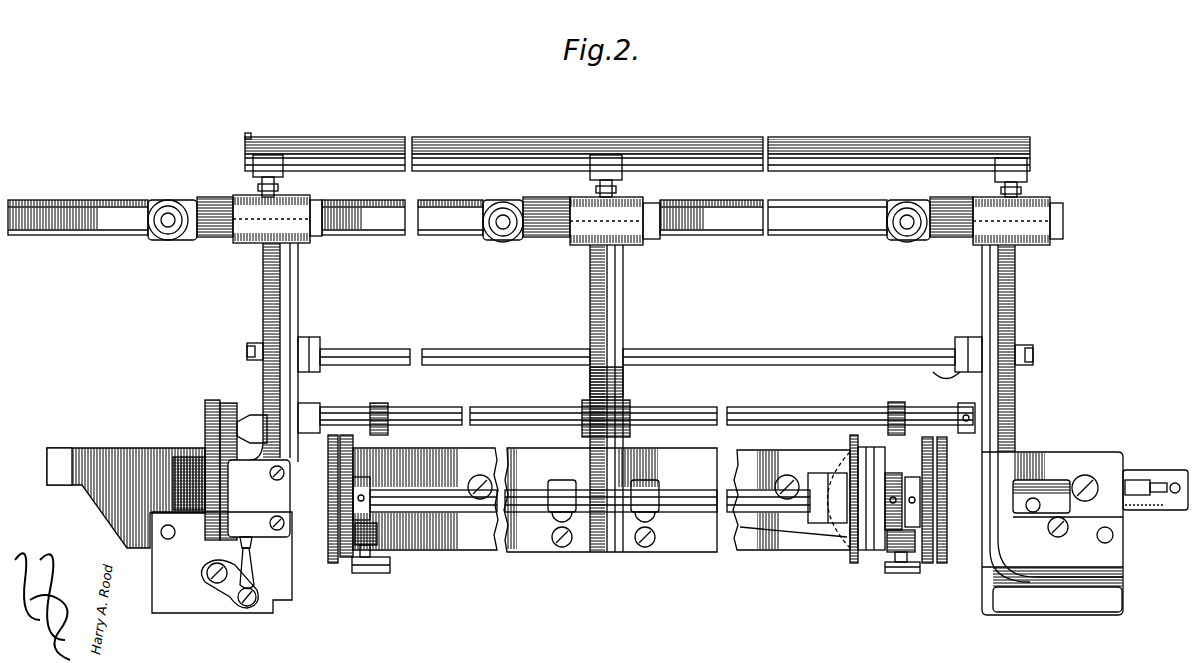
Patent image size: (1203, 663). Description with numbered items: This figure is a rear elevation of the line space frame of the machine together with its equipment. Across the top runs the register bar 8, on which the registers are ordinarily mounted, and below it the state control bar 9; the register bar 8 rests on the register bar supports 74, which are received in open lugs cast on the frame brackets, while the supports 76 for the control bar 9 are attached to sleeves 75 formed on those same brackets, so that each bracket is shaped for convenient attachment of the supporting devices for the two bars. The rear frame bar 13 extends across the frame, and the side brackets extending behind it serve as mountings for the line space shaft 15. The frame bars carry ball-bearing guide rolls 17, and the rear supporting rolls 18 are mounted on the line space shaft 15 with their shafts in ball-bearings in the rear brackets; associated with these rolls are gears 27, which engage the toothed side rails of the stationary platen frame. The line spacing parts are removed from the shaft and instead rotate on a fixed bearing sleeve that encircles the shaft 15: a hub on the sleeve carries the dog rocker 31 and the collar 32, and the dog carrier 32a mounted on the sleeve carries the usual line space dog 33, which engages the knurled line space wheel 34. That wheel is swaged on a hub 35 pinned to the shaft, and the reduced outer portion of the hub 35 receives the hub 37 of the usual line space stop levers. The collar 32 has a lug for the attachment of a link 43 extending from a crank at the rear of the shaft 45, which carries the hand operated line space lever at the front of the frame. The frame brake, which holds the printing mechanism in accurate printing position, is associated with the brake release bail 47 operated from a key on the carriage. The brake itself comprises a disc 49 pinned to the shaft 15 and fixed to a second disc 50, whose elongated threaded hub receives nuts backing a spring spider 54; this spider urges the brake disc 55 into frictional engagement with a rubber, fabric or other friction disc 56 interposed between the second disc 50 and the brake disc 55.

The register bar 8 is at (346, 137).
The state control bar 9 is at (96, 201).
The rear frame bar 13 is at (488, 544).
The line space shaft 15 is at (528, 493).
The guide rolls 17 is at (372, 574).
The rear supporting rolls 18 is at (347, 434).
The gears 27 is at (333, 434).
The dog rocker 31 is at (235, 403).
The collar 32 is at (255, 555).
The dog carrier 32a is at (223, 464).
The line space dog 33 is at (215, 401).
The line space wheel 34 is at (126, 473).
The hub 35 is at (183, 535).
The hub of the line space stop levers 37 is at (194, 453).
The link 43 is at (249, 578).
The shaft 45 is at (197, 587).
The brake release bail 47 is at (682, 411).
The disc 49 is at (880, 553).
The second disc 50 is at (872, 553).
The spring spider 54 is at (848, 463).
The brake disc 55 is at (855, 436).
The friction disc 56 is at (869, 444).
The register bar supports 74 is at (285, 181).
The sleeves 75 is at (247, 234).
The supports for the control bar 76 is at (190, 201).